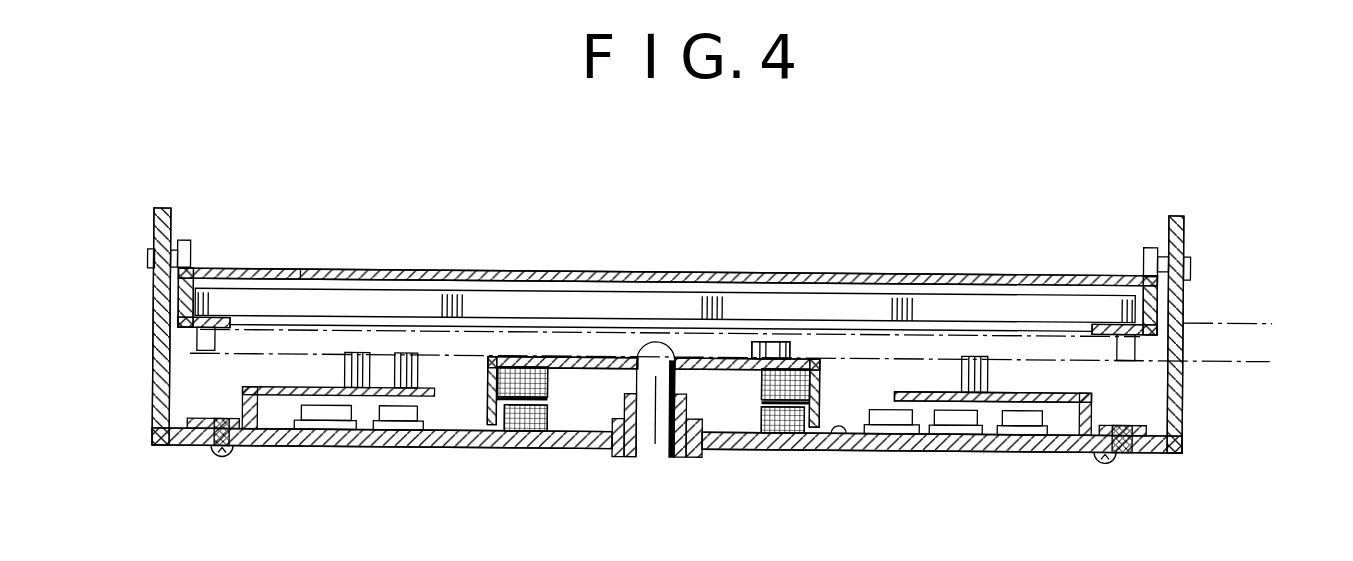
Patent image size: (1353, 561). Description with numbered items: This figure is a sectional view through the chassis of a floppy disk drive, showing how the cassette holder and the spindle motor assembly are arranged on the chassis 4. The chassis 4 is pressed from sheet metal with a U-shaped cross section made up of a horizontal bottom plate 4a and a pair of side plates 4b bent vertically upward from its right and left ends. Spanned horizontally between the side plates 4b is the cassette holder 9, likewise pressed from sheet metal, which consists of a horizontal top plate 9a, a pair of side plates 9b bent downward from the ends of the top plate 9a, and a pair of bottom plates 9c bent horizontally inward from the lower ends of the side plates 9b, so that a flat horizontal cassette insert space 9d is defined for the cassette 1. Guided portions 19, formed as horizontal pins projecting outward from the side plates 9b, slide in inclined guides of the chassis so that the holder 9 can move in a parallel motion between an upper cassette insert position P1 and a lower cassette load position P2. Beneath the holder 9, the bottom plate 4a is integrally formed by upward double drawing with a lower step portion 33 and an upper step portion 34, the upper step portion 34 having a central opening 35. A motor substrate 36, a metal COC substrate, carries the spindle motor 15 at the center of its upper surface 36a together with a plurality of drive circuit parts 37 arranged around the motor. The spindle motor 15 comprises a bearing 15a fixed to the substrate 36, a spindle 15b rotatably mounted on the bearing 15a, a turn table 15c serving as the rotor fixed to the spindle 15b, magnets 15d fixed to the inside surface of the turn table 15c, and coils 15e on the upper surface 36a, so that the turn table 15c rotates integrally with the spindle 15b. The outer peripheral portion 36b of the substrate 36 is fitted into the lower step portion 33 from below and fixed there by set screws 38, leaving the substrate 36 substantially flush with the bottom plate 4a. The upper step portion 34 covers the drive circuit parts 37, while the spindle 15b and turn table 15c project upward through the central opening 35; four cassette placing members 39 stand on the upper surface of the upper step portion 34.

The disk cassette 1 is at (1062, 340).
The chassis 4 is at (150, 418).
The bottom plate 4a is at (183, 445).
The side plates 4b is at (152, 340).
The cassette holder 9 is at (675, 268).
The top plate 9a is at (608, 268).
The side plates 9b is at (180, 299).
The bottom plates 9c is at (218, 325).
The cassette insert space 9d is at (302, 269).
The spindle motor 15 is at (630, 340).
The bearing 15a is at (622, 445).
The spindle 15b is at (690, 364).
The turn table 15c is at (572, 354).
The magnets 15d is at (514, 354).
The coils 15e is at (522, 418).
The guided portions 19 is at (147, 256).
The lower step portion 33 is at (222, 418).
The upper step portion 34 is at (352, 352).
The central opening 35 is at (895, 388).
The motor substrate 36 is at (922, 436).
The upper surface 36a is at (840, 428).
The outer peripheral portion 36b is at (1065, 432).
The drive circuit parts 37 is at (395, 428).
The set screws 38 is at (228, 452).
The cassette placing members 39 is at (393, 352).
The cassette insert position P1 is at (1256, 310).
The cassette load position P2 is at (1240, 357).